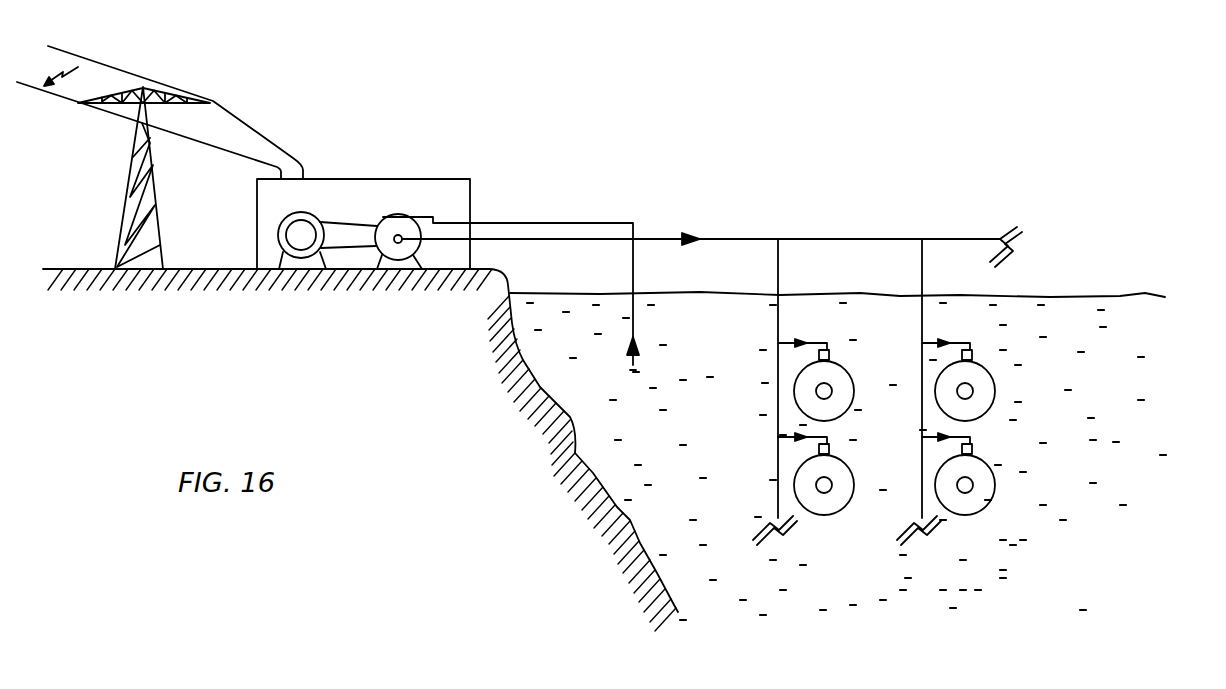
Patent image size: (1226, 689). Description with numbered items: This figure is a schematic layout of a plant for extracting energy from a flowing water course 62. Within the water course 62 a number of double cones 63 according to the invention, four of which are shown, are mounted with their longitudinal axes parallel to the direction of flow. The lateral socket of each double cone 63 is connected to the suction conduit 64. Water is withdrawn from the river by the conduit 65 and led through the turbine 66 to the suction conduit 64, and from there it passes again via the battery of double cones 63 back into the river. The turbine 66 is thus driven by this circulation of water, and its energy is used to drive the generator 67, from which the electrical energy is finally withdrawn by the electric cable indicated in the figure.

The water course 62 is at (1055, 425).
The double cones 63 is at (940, 393).
The suction conduit 64 is at (733, 242).
The conduit 65 is at (518, 222).
The turbine 66 is at (398, 252).
The generator 67 is at (310, 248).